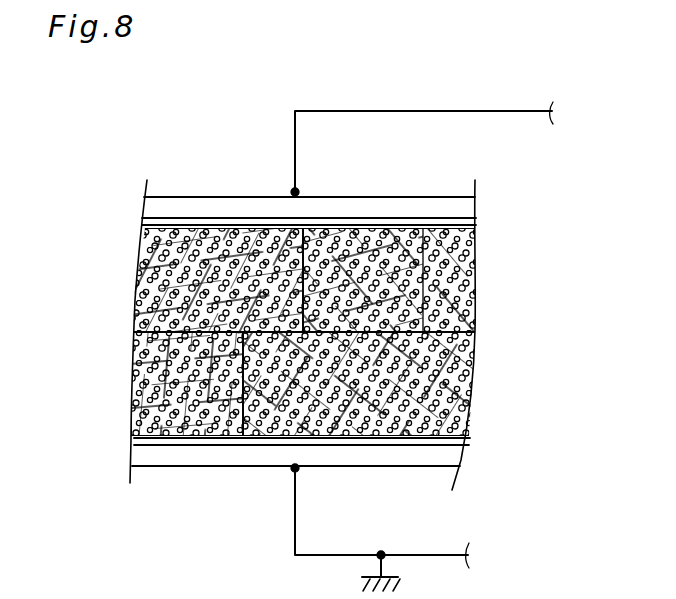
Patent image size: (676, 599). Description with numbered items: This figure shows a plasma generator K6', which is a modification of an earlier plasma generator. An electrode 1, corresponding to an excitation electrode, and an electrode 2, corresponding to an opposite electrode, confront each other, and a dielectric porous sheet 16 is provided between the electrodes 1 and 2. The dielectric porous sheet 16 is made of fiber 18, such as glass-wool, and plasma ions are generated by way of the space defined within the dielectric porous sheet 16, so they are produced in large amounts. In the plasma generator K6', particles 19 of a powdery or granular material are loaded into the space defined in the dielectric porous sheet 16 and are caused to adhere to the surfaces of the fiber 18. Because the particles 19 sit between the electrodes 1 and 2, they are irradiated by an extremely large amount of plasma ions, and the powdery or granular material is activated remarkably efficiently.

The plasma generator K6' is at (360, 306).
The electrode 1 is at (234, 207).
The electrode 2 is at (213, 457).
The dielectric porous sheet 16 is at (465, 293).
The fiber 18 is at (472, 353).
The particles 19 is at (468, 418).